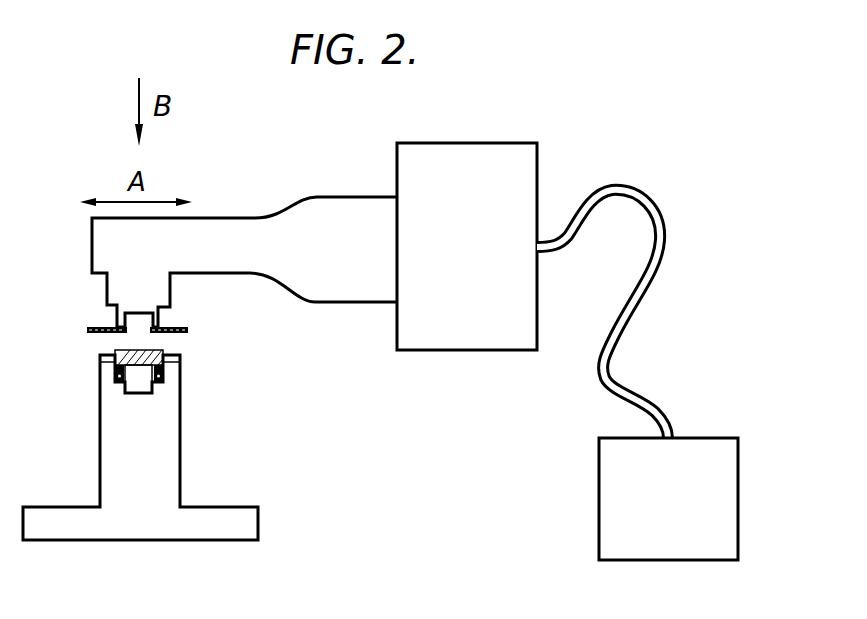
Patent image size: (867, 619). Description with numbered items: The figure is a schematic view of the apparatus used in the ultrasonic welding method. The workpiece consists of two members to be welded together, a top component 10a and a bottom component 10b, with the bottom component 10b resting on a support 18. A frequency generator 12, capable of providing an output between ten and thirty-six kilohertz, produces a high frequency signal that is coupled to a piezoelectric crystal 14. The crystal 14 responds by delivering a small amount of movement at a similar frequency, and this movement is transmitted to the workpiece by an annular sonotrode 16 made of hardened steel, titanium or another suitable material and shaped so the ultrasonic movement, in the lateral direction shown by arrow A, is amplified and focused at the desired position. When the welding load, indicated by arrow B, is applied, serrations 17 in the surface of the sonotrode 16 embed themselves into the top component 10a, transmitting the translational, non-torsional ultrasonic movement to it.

The top component 10a is at (168, 327).
The bottom component 10b is at (157, 351).
The frequency generator 12 is at (676, 515).
The piezoelectric crystal 14 is at (470, 270).
The sonotrode 16 is at (237, 258).
The serrations 17 is at (112, 324).
The support 18 is at (196, 394).